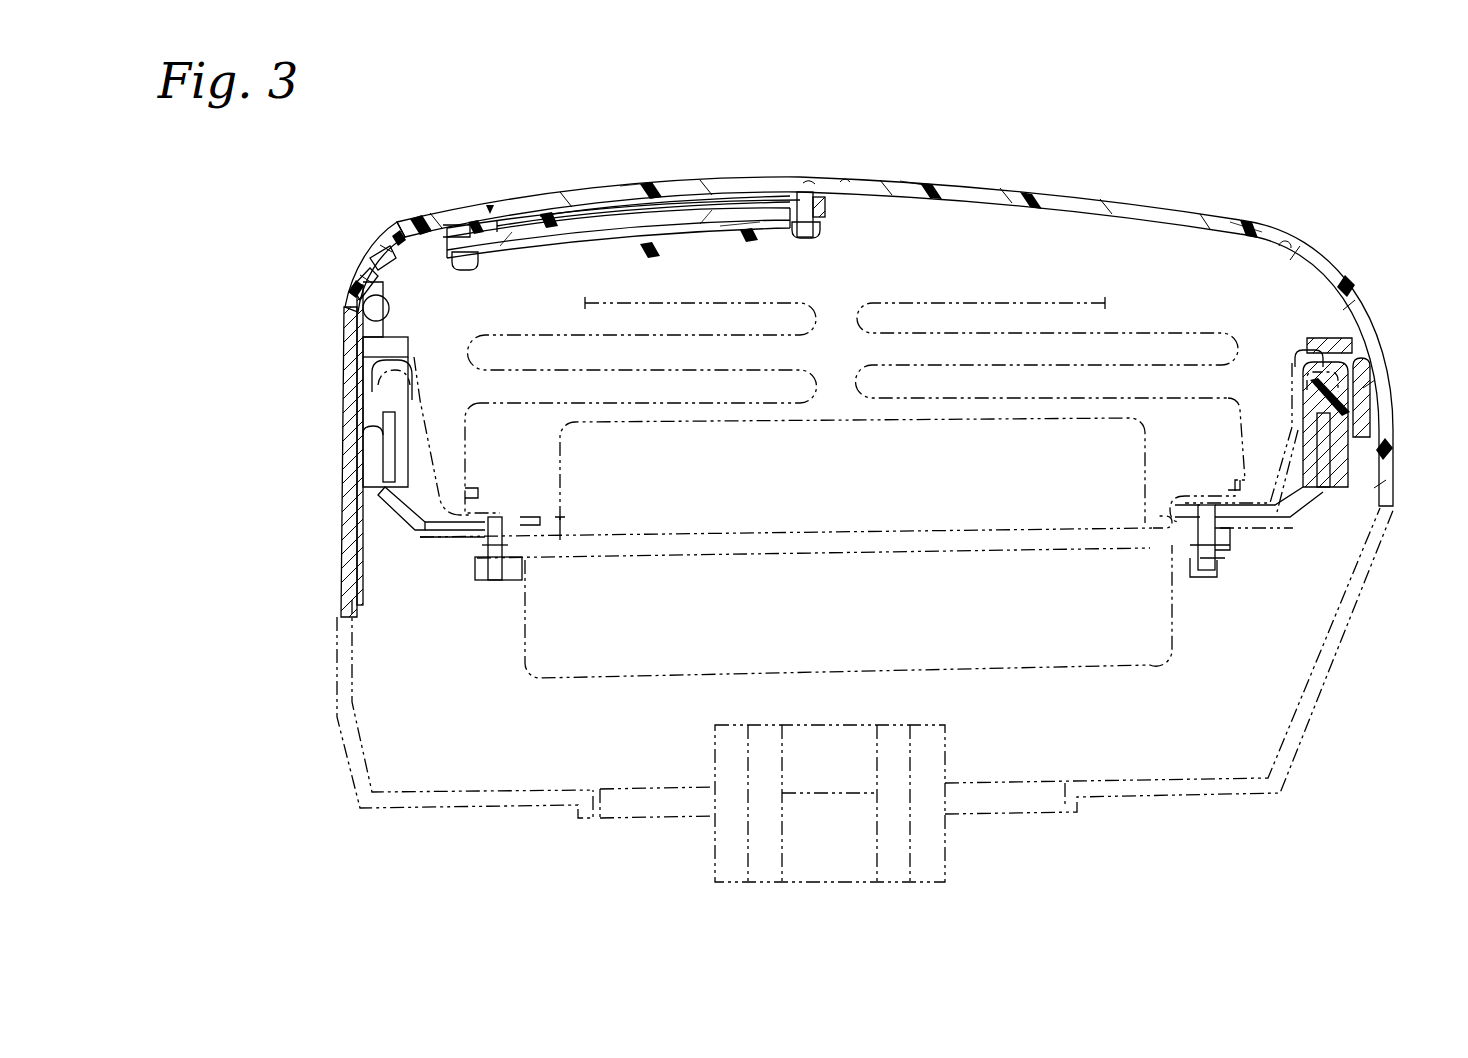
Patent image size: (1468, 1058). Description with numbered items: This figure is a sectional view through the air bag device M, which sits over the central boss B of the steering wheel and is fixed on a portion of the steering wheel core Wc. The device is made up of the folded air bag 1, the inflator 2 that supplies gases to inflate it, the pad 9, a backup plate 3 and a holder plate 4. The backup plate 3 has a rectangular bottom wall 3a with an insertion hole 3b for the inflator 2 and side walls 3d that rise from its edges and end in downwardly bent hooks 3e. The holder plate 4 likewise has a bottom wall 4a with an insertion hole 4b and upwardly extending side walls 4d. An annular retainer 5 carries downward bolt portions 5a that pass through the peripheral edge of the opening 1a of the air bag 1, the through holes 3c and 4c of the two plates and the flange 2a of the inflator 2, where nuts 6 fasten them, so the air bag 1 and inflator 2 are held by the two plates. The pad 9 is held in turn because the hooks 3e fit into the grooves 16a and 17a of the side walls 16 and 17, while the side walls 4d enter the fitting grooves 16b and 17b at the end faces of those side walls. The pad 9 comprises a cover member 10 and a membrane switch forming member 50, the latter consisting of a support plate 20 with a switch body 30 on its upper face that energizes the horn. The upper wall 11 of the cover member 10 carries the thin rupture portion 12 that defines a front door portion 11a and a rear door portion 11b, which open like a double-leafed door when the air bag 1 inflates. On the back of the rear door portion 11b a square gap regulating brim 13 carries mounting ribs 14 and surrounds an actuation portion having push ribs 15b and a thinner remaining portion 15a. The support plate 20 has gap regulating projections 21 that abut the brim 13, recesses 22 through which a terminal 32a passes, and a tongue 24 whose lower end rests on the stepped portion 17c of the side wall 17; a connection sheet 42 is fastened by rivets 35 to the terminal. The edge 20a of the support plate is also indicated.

The air bag 1 is at (1200, 330).
The opening 1a is at (528, 515).
The inflator 2 is at (628, 676).
The flange 2a is at (563, 560).
The backup plate 3 is at (432, 442).
The bottom wall 3a is at (562, 517).
The insertion hole 3b is at (1170, 505).
The through holes 3c is at (1212, 495).
The side walls 3d is at (423, 390).
The hooks 3e is at (364, 347).
The holder plate 4 is at (413, 535).
The bottom wall 4a is at (460, 548).
The insertion hole 4b is at (1158, 545).
The through holes 4c is at (1230, 540).
The side walls 4d is at (395, 500).
The retainer 5 is at (478, 495).
The bolt portions 5a is at (492, 585).
The nuts 6 is at (502, 572).
The pad 9 is at (1187, 182).
The cover member 10 is at (1013, 190).
The upper wall 11 is at (930, 183).
The front door portion 11a is at (1255, 228).
The rear door portion 11b is at (640, 185).
The rupture portion 12 is at (845, 182).
The gap regulating brim 13 is at (810, 183).
The mounting ribs 14 is at (802, 190).
The remaining portion 15a is at (487, 200).
The push ribs 15b is at (580, 202).
The side wall 16 is at (1365, 328).
The groove 16a is at (1304, 345).
The fitting groove 16b is at (1330, 440).
The side wall 17 is at (355, 375).
The groove 17a is at (372, 397).
The fitting groove 17b is at (352, 450).
The stepped portion 17c is at (395, 336).
The support plate 20 is at (655, 238).
The reflector edge 20a is at (732, 232).
The gap regulating projections 21 is at (826, 207).
The recesses 22 is at (415, 218).
The tongue 24 is at (360, 276).
The switch body 30 is at (710, 196).
The terminal 32a is at (378, 246).
The rivets 35 is at (363, 303).
The connection sheet 42 is at (350, 515).
The membrane switch forming member 50 is at (493, 205).
The air bag device M is at (1180, 662).
The core Wc is at (945, 750).
The central boss B is at (950, 895).